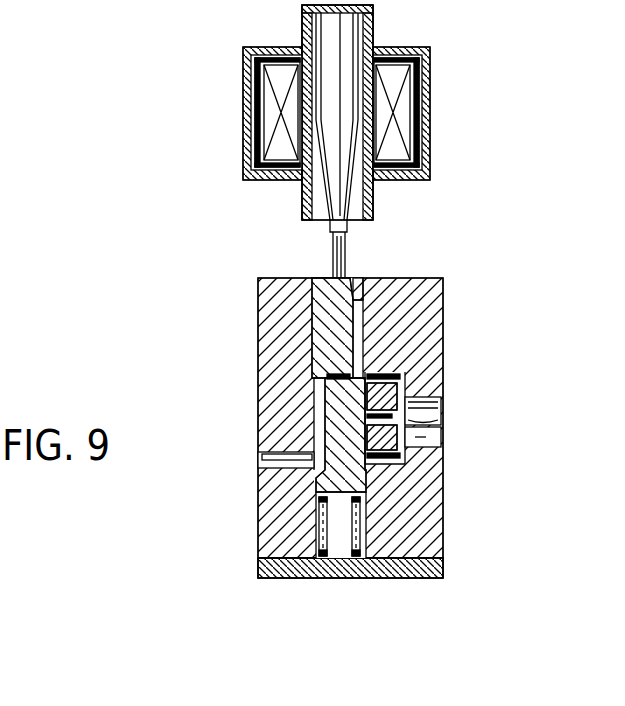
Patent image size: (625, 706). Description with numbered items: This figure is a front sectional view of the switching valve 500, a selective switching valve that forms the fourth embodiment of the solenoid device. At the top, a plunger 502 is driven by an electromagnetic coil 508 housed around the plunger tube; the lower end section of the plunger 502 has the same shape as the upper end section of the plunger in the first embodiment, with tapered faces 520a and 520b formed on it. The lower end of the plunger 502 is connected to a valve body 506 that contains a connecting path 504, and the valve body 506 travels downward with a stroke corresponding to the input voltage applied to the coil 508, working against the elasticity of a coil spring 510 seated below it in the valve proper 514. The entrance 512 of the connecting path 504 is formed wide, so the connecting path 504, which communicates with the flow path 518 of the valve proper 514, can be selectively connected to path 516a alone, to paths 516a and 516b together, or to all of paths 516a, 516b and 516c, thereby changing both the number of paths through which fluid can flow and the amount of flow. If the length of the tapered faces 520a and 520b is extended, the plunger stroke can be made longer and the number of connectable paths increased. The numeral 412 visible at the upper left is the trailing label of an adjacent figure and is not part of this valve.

The switching valve 500 is at (457, 101).
The plunger 502 is at (344, 42).
The solenoid coil 508 is at (272, 124).
The tapered face 520a is at (322, 198).
The tapered face 520b is at (368, 199).
The valve body 506 is at (330, 312).
The entrance 512 is at (400, 318).
The connecting path 504 is at (358, 392).
The path 516a is at (435, 378).
The path 516b is at (428, 420).
The path 516c is at (438, 470).
The flow path 518 is at (262, 462).
The coil spring 510 is at (310, 532).
The valve proper 514 is at (443, 578).
The adjacent figure numeral 412 is at (37, 9).